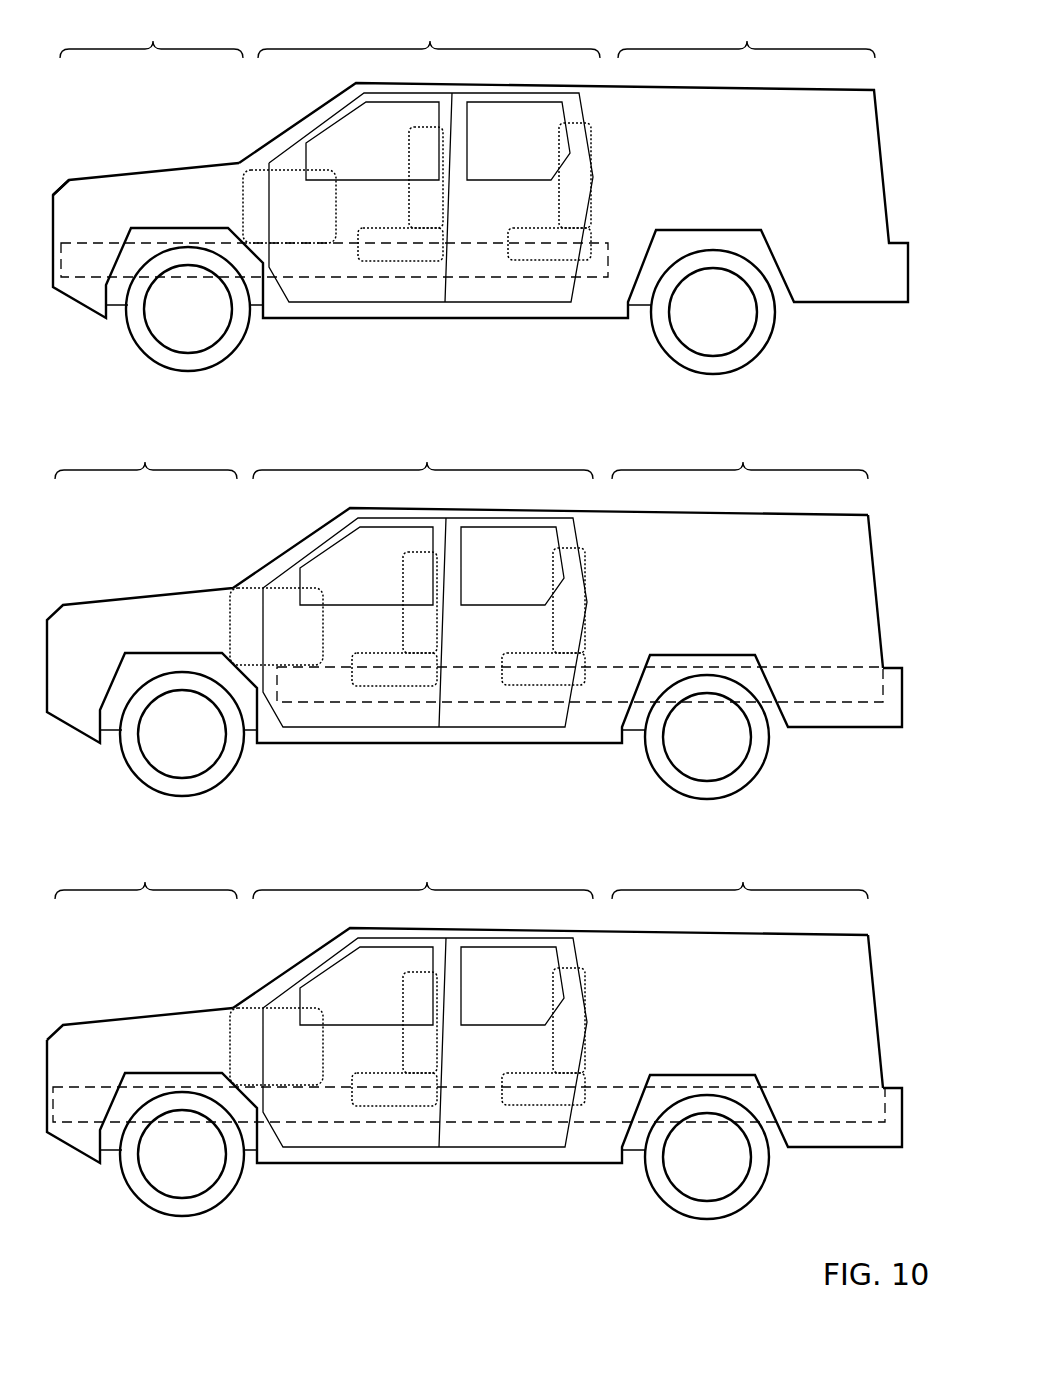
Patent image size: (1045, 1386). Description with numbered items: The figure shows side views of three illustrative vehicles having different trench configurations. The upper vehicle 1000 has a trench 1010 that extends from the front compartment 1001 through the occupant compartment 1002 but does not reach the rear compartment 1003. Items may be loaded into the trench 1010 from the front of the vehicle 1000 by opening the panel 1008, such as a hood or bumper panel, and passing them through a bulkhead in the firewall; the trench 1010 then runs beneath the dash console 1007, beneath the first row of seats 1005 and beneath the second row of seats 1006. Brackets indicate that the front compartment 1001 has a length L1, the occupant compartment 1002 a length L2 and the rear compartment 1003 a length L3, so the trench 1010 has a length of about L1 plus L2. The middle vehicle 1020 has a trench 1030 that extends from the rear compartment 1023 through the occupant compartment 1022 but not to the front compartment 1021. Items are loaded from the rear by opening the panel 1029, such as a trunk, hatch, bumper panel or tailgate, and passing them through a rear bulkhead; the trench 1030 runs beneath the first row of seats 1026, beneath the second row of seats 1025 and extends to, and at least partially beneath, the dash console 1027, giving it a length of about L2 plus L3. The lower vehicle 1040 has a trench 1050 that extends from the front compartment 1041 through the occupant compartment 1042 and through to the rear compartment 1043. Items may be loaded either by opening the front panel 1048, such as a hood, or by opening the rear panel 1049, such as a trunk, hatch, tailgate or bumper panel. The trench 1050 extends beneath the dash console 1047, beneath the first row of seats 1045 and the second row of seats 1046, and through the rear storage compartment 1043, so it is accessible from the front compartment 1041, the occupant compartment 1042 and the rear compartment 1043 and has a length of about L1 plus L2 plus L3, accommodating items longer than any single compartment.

The vehicle 1000 is at (889, 41).
The front compartment 1001 is at (151, 53).
The occupant compartment 1002 is at (429, 53).
The rear compartment 1003 is at (746, 47).
The first row of seats 1005 is at (432, 258).
The second row of seats 1006 is at (533, 258).
The dash console 1007 is at (243, 173).
The panel 1008 is at (67, 182).
The trench 1010 is at (332, 278).
The vehicle 1020 is at (884, 465).
The front compartment 1021 is at (146, 479).
The occupant compartment 1022 is at (423, 479).
The rear compartment 1023 is at (740, 473).
The second row of seats 1025 is at (416, 684).
The first row of seats 1026 is at (513, 684).
The dash console 1027 is at (230, 593).
The panel 1029 is at (883, 608).
The trench 1030 is at (343, 703).
The vehicle 1040 is at (884, 884).
The front compartment 1041 is at (146, 899).
The occupant compartment 1042 is at (423, 899).
The rear compartment 1043 is at (740, 892).
The first row of seats 1045 is at (412, 1103).
The second row of seats 1046 is at (513, 1103).
The dash console 1047 is at (237, 1005).
The panel 1048 is at (77, 1043).
The panel 1049 is at (875, 1009).
The trench 1050 is at (310, 1123).